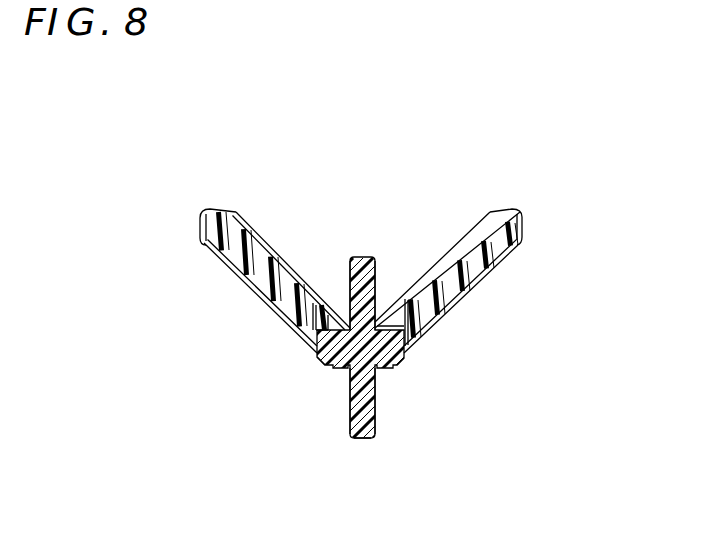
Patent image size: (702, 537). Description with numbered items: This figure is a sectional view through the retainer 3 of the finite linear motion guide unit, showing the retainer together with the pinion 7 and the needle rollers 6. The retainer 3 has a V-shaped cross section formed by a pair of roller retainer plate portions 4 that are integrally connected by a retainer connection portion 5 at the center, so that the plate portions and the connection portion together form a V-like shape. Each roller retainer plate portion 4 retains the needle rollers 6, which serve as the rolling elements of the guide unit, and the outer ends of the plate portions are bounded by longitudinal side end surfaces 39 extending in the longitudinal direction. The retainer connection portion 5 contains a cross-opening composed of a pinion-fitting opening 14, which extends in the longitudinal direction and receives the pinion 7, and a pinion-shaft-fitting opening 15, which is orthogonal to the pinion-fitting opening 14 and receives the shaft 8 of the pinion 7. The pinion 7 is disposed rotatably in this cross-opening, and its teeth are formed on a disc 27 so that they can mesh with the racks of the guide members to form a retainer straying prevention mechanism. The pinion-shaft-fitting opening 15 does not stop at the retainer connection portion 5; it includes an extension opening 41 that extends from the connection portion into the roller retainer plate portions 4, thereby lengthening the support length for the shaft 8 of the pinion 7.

The retainer 3 is at (283, 210).
The roller retainer plate portion 4 is at (522, 340).
The retainer connection portion 5 is at (267, 438).
The needle roller 6 is at (553, 287).
The pinion 7 is at (407, 441).
The shaft 8 is at (440, 392).
The pinion-fitting opening 14 is at (360, 257).
The pinion-shaft-fitting opening 15 is at (337, 363).
The disc 27 is at (328, 488).
The longitudinal side end surface 39 is at (550, 178).
The extension opening 41 is at (387, 325).